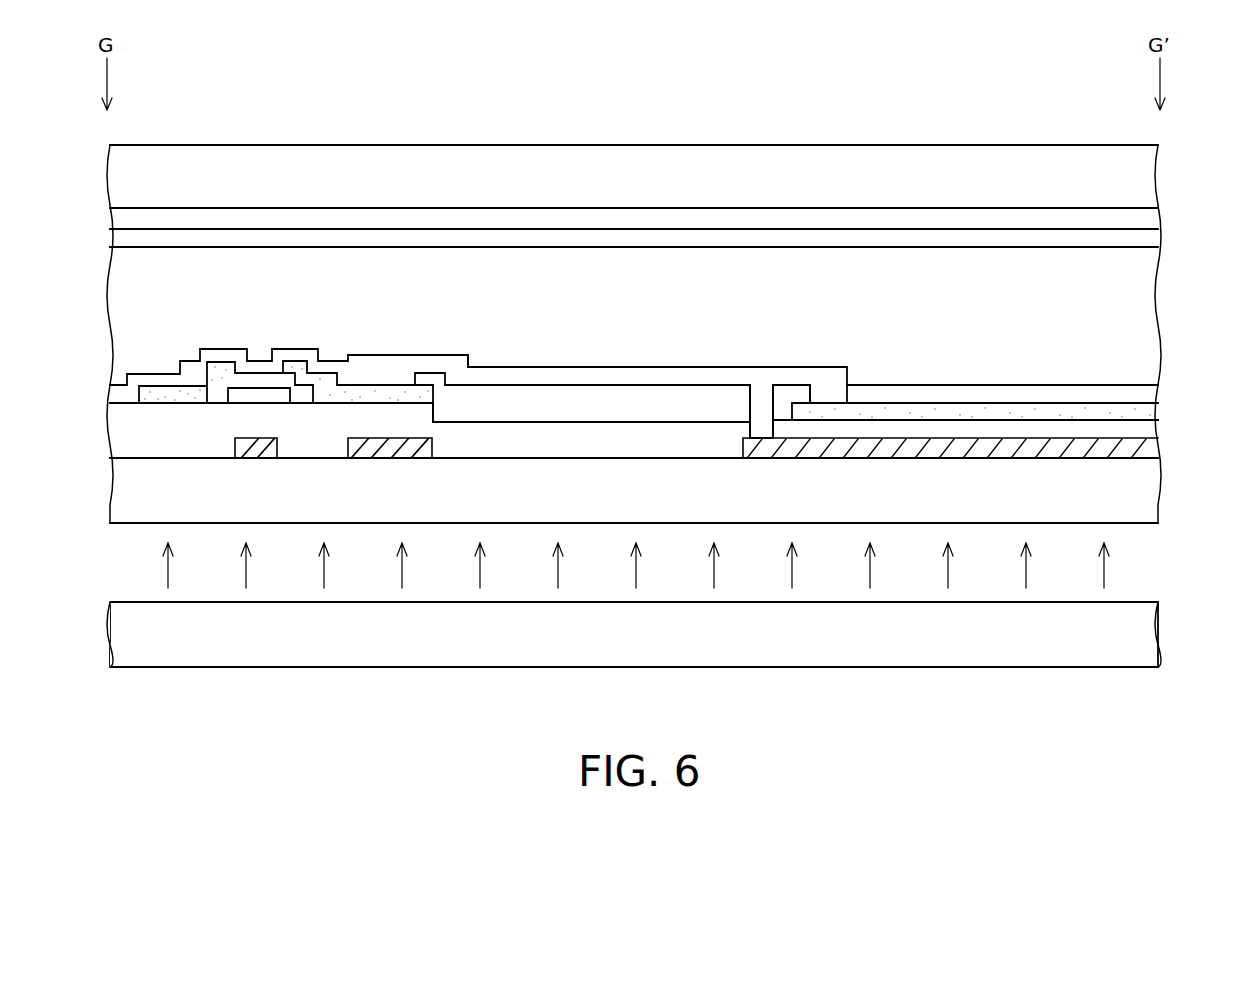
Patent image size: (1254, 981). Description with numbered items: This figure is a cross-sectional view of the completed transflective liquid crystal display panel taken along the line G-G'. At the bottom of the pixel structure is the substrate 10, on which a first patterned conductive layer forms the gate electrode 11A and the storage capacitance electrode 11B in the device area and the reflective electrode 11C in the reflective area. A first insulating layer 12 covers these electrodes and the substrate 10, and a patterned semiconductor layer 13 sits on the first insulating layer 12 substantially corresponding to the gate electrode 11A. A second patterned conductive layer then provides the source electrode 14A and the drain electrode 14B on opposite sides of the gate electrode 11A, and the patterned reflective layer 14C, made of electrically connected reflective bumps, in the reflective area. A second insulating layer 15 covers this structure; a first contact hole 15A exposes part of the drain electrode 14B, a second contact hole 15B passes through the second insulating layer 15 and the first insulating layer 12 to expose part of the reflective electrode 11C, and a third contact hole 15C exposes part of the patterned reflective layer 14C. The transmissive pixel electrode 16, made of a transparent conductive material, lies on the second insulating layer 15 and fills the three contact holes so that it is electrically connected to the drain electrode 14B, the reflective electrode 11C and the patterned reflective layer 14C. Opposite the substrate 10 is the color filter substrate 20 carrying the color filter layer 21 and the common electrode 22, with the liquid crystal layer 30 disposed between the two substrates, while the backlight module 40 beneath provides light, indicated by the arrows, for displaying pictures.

The substrate 10 is at (1148, 498).
The gate electrode 11A is at (258, 450).
The storage capacitance electrode 11B is at (362, 447).
The reflective electrode 11C is at (1148, 448).
The first insulating layer 12 is at (125, 437).
The patterned semiconductor layer 13 is at (263, 378).
The source electrode 14A is at (197, 378).
The drain electrode 14B is at (327, 380).
The patterned reflective layer 14C is at (1010, 412).
The second insulating layer 15 is at (118, 397).
The first contact hole 15A is at (401, 362).
The second contact hole 15B is at (768, 377).
The third contact hole 15C is at (829, 377).
The transmissive pixel electrode 16 is at (620, 367).
The color filter substrate 20 is at (1148, 176).
The color filter layer 21 is at (1148, 222).
The common electrode 22 is at (1148, 249).
The liquid crystal layer 30 is at (1148, 323).
The backlight module 40 is at (1148, 636).